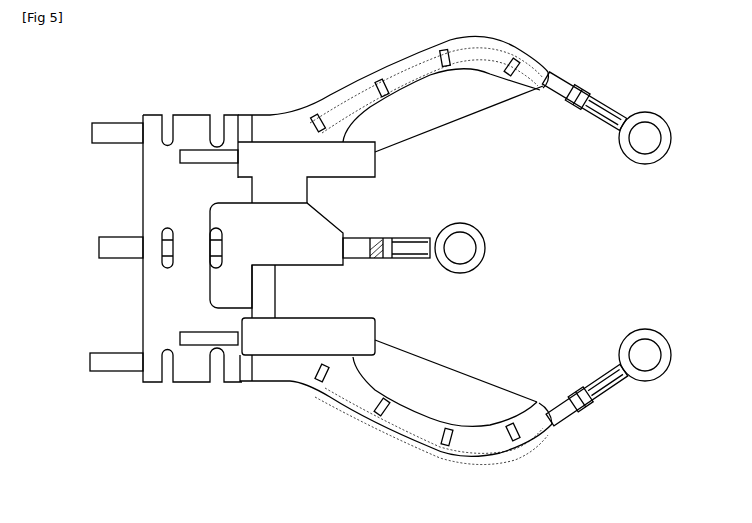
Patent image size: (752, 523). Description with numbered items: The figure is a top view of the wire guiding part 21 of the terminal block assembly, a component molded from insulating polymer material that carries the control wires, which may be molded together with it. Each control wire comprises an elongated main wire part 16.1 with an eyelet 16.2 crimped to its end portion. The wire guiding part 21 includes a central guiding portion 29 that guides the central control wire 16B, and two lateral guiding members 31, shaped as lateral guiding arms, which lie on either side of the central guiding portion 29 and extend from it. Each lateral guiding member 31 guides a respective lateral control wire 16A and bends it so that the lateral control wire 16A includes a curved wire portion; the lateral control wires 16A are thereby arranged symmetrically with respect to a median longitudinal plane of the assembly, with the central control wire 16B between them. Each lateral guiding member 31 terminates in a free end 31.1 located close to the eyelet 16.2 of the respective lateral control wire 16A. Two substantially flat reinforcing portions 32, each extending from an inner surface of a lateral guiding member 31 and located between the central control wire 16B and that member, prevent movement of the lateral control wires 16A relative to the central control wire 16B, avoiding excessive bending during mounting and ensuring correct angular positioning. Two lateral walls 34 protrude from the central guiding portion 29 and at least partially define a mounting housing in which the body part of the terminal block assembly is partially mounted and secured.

The wire guiding part 21 is at (206, 102).
The elongated main wire part 16.1 is at (115, 142).
The lateral walls 34 is at (340, 150).
The central guiding portion 29 is at (300, 253).
The central control wire 16B is at (357, 240).
The lateral guiding members 31 is at (412, 57).
The reinforcing portions 32 is at (440, 120).
The free end 31.1 is at (548, 70).
The lateral control wires 16A is at (565, 86).
The eyelet 16.2 is at (656, 117).